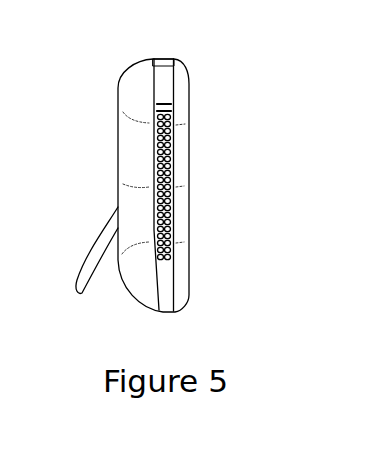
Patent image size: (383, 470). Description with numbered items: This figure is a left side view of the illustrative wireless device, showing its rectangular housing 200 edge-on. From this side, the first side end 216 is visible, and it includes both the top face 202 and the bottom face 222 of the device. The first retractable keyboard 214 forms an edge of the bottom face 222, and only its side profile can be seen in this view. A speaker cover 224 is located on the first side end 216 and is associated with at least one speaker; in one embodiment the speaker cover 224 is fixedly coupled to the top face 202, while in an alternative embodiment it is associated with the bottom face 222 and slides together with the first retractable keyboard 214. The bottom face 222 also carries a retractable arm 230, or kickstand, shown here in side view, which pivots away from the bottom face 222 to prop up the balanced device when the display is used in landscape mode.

The rectangular housing 200 is at (173, 67).
The first side end 216 is at (155, 72).
The bottom face 222 is at (135, 150).
The first retractable keyboard 214 is at (133, 210).
The top face 202 is at (180, 153).
The speaker cover 224 is at (173, 180).
The retractable arm 230 is at (95, 233).